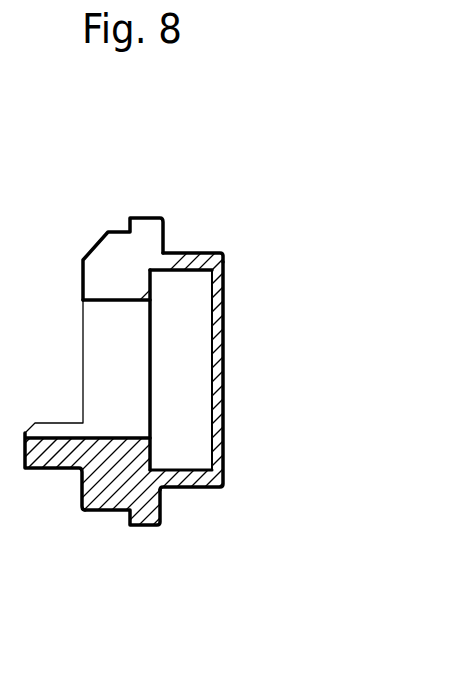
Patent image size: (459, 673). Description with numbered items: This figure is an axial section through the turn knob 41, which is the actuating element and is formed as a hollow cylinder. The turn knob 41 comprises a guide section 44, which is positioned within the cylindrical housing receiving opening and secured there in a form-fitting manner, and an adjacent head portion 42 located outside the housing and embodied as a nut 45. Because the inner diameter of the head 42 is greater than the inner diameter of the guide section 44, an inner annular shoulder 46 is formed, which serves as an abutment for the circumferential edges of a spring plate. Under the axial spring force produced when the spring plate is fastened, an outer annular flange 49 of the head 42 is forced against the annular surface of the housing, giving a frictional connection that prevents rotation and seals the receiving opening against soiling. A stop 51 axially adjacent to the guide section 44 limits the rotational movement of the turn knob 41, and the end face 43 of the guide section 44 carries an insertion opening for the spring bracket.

The turn knob 41 is at (200, 515).
The head portion 42 is at (198, 478).
The end face 43 is at (83, 282).
The guide section 44 is at (98, 267).
The nut 45 is at (207, 253).
The inner annular shoulder 46 is at (155, 288).
The outer annular flange 49 is at (127, 515).
The stop 51 is at (38, 462).